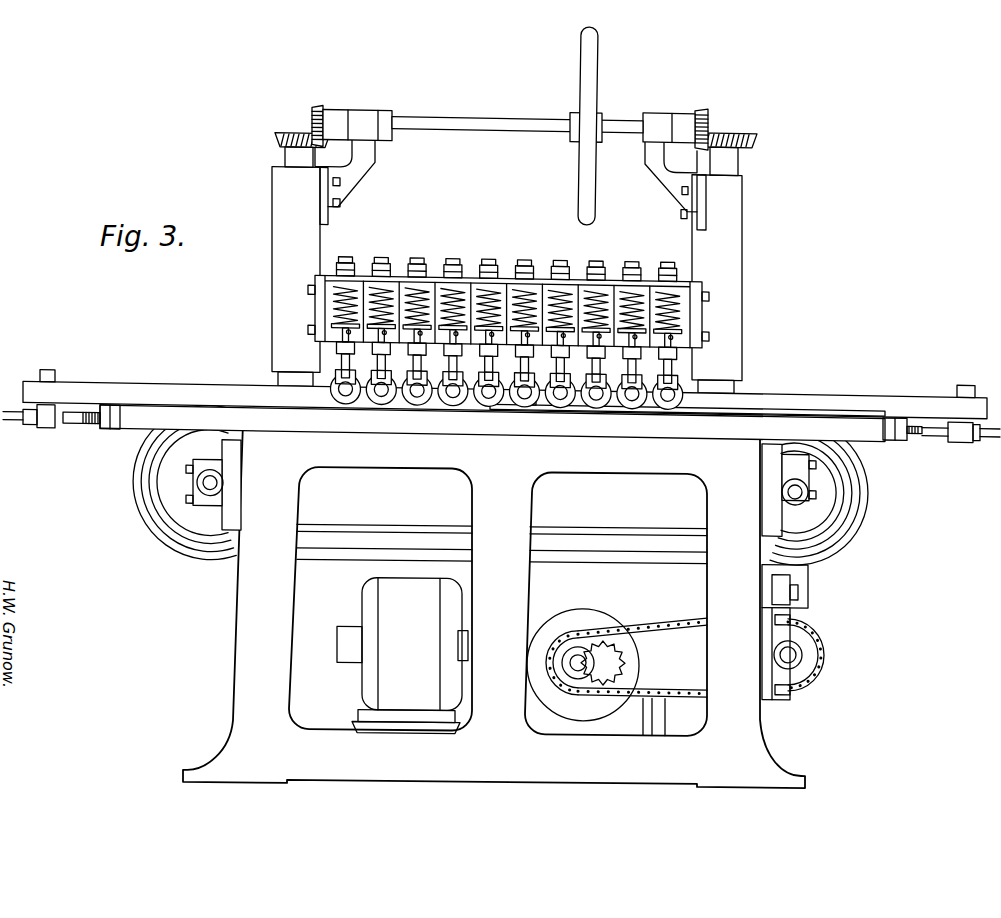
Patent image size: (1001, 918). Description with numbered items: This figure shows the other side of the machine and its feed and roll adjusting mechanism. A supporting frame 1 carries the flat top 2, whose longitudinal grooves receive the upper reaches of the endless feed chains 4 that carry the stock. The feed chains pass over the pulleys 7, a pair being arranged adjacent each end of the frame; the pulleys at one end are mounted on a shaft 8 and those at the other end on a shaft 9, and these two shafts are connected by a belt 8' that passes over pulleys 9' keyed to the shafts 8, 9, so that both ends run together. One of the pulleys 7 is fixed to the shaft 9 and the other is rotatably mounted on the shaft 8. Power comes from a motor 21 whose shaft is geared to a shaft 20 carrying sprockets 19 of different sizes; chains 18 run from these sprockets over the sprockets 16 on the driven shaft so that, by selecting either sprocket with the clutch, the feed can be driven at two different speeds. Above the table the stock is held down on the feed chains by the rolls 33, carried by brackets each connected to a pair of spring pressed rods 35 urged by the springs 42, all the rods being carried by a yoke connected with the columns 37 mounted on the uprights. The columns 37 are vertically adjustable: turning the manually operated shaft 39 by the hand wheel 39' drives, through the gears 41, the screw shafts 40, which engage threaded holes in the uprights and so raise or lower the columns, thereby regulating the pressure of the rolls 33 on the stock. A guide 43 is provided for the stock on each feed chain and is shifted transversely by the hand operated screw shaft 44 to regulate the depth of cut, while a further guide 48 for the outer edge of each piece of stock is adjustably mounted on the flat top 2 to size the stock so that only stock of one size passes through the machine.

The supporting frame 1 is at (494, 605).
The flat top 2 is at (548, 419).
The endless feed chains 4 is at (165, 536).
The pulleys 7 is at (855, 498).
The shaft 8 is at (225, 482).
The belt 8' is at (502, 529).
The shaft 9 is at (835, 480).
The pulleys 9' is at (824, 505).
The sprockets 16 is at (812, 644).
The chains 18 is at (658, 615).
The sprockets 19 is at (608, 654).
The shaft 20 is at (578, 651).
The motor 21 is at (402, 655).
The rolls 33 is at (437, 368).
The spring pressed rods 35 is at (457, 250).
The columns 37 is at (285, 272).
The manually operated shaft 39 is at (509, 115).
The hand wheel 39' is at (604, 126).
The screw shafts 40 is at (292, 130).
The gears 41 is at (320, 100).
The springs 42 is at (593, 278).
The guide 43 is at (172, 380).
The hand operated screw shaft 44 is at (82, 421).
The guide 48 is at (775, 396).